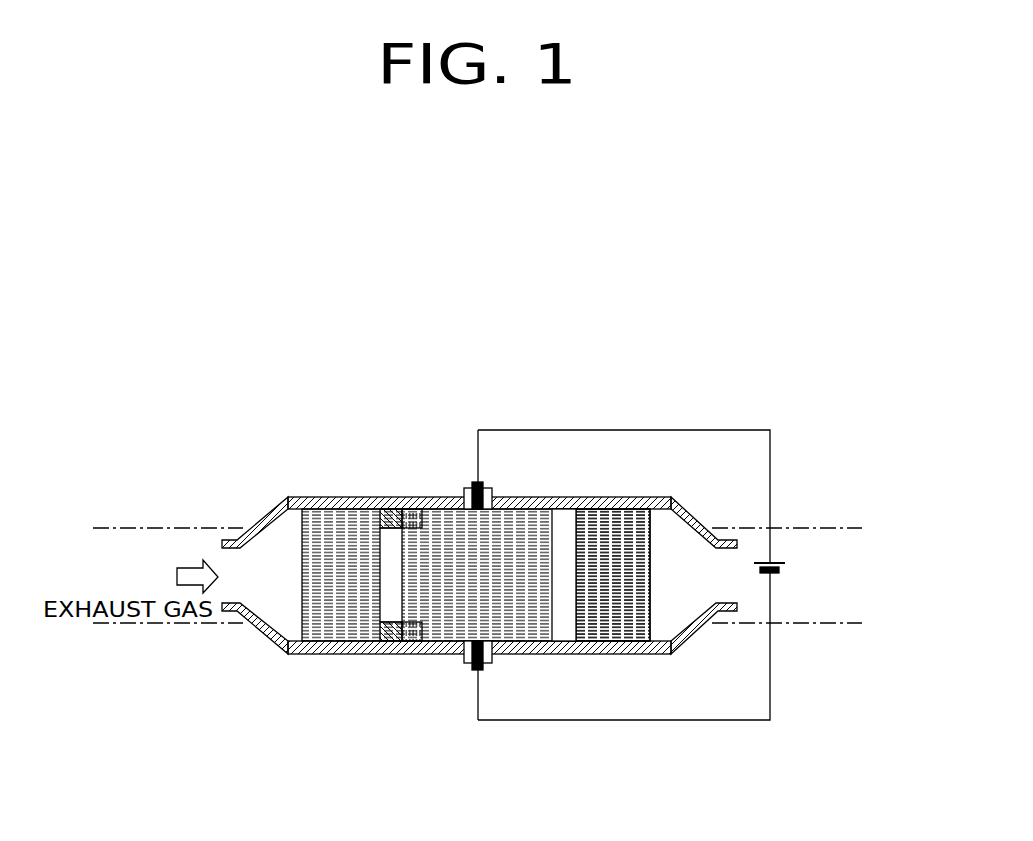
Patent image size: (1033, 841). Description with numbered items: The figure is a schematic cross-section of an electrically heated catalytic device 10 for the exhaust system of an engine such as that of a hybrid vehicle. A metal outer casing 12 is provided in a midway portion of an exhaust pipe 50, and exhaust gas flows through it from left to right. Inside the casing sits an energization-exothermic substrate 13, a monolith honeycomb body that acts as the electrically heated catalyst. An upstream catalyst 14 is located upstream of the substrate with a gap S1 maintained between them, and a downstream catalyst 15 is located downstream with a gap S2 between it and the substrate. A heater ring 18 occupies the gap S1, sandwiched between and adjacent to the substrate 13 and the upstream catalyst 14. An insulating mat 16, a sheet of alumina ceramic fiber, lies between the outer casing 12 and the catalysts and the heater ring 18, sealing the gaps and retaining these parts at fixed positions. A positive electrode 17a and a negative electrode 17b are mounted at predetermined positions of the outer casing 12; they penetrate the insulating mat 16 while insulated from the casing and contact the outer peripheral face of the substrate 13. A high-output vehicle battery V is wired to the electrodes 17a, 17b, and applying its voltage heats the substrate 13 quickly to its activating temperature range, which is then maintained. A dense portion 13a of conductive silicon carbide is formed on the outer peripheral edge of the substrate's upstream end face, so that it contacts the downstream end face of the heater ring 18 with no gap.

The electrically heated catalytic device 10 is at (322, 430).
The outer casing 12 is at (297, 497).
The energization-exothermic substrate 13 is at (448, 532).
The dense portion 13a is at (408, 654).
The upstream catalyst 14 is at (313, 606).
The downstream catalyst 15 is at (622, 622).
The insulating mat 16 is at (327, 654).
The positive electrode 17a is at (483, 481).
The negative electrode 17b is at (483, 670).
The heater ring 18 is at (383, 654).
The gap S1 is at (387, 555).
The gap S2 is at (565, 555).
The high-output battery V is at (780, 560).
The exhaust pipe 50 is at (138, 528).